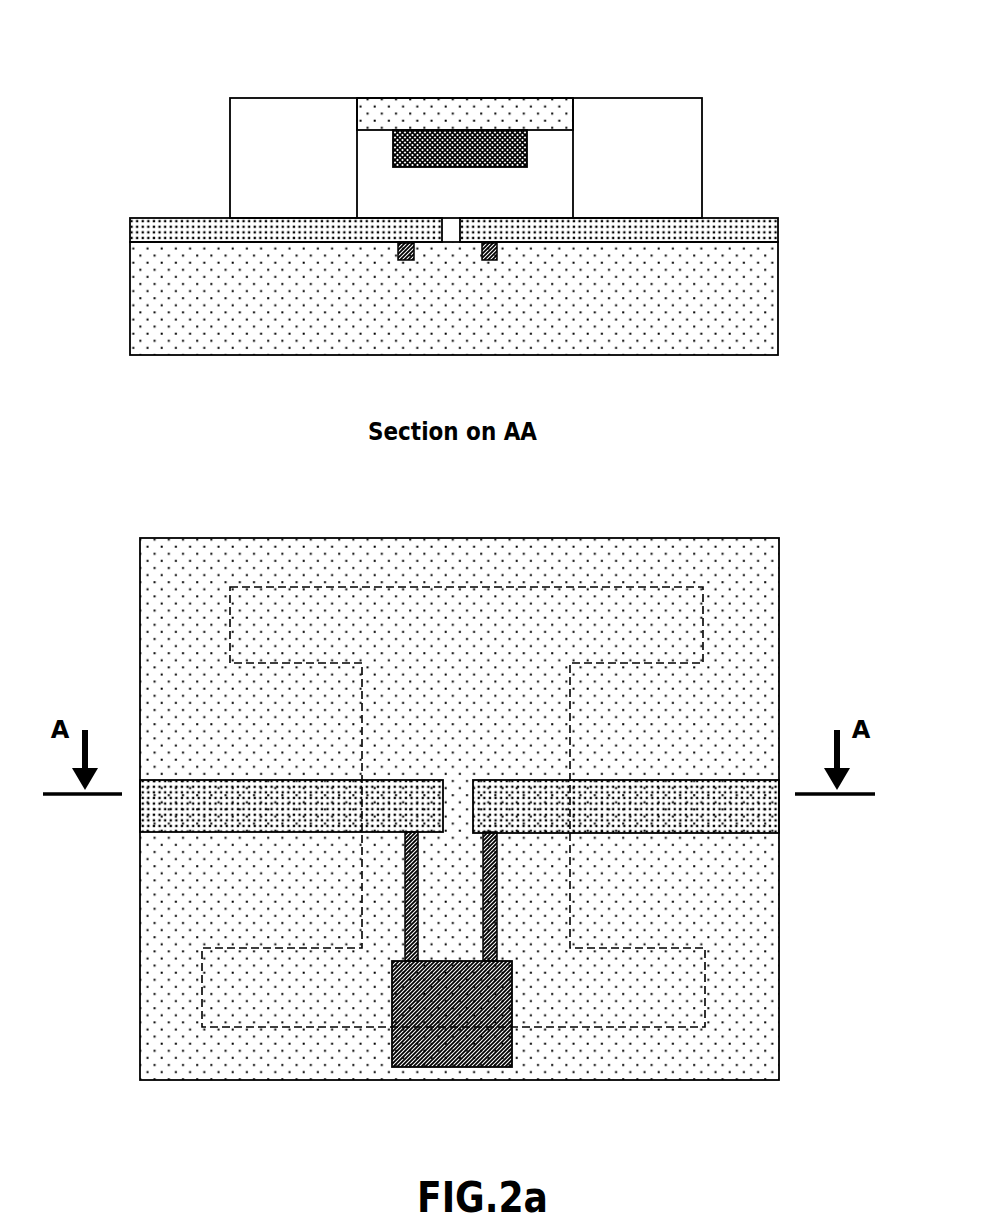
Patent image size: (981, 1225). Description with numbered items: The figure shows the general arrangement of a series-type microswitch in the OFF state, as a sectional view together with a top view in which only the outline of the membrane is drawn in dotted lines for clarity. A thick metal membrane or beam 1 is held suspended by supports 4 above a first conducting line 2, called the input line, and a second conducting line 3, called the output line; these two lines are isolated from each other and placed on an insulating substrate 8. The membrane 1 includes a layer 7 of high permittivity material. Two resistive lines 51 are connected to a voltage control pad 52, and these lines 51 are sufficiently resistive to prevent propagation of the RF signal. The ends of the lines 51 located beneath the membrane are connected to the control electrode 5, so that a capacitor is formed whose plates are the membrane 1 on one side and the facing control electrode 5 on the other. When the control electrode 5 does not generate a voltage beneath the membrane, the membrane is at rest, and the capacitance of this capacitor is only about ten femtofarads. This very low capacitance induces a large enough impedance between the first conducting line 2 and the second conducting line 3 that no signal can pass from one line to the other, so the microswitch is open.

The membrane 1 is at (542, 118).
The first conducting line 2 is at (168, 230).
The second conducting line 3 is at (730, 232).
The supports 4 is at (668, 200).
The control electrode 5 is at (458, 810).
The layer of high permittivity material 7 is at (478, 128).
The insulating substrate 8 is at (222, 310).
The resistive lines 51 is at (400, 258).
The voltage control pad 52 is at (425, 1043).